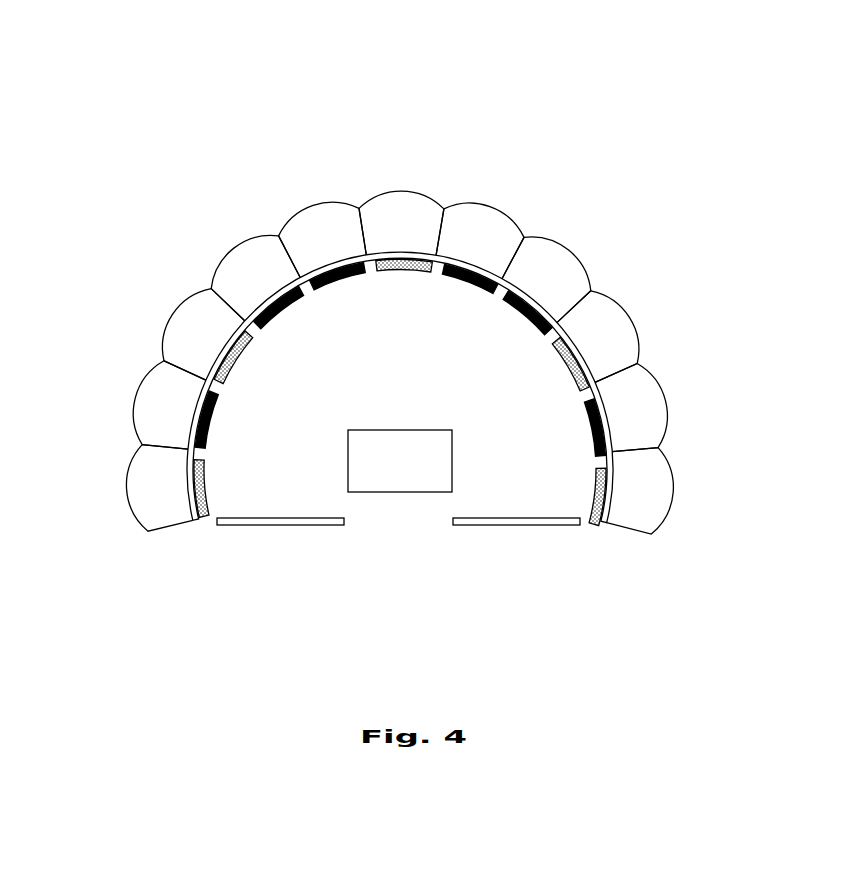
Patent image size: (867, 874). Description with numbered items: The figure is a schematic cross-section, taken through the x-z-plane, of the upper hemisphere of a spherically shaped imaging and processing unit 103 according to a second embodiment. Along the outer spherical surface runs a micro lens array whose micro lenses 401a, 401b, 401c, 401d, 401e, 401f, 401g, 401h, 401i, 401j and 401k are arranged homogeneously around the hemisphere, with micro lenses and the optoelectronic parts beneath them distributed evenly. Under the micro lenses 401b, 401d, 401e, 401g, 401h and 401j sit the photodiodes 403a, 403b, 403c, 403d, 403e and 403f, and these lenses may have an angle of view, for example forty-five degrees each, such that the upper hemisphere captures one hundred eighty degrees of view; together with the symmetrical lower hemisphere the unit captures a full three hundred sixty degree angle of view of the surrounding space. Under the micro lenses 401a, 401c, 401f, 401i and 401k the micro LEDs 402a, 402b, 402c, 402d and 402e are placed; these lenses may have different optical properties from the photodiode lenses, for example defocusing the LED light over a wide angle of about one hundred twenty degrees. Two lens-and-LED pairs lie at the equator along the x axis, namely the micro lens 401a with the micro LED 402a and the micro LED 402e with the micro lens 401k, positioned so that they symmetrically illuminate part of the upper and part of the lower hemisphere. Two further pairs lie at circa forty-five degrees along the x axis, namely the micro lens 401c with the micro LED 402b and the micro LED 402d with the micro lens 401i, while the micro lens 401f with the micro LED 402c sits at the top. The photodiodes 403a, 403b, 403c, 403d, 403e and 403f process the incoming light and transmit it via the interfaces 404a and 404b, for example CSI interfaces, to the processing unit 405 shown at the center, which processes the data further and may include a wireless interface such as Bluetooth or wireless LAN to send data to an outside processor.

The imaging and processing unit 103 is at (437, 128).
The micro lens 401a is at (127, 475).
The micro lens 401b is at (140, 398).
The micro lens 401c is at (177, 317).
The micro lens 401d is at (230, 267).
The micro lens 401e is at (297, 213).
The micro lens 401f is at (390, 197).
The micro lens 401g is at (512, 215).
The micro lens 401h is at (580, 265).
The micro lens 401i is at (637, 332).
The micro lens 401j is at (662, 402).
The micro lens 401k is at (672, 488).
The micro LED 402a is at (205, 517).
The micro LED 402b is at (238, 358).
The micro LED 402c is at (395, 268).
The micro LED 402d is at (578, 392).
The micro LED 402e is at (590, 525).
The photodiode 403a is at (209, 422).
The photodiode 403b is at (265, 330).
The photodiode 403c is at (323, 293).
The photodiode 403d is at (455, 278).
The photodiode 403e is at (540, 335).
The photodiode 403f is at (593, 449).
The interface 404a is at (285, 525).
The interface 404b is at (510, 525).
The processing unit 405 is at (400, 461).